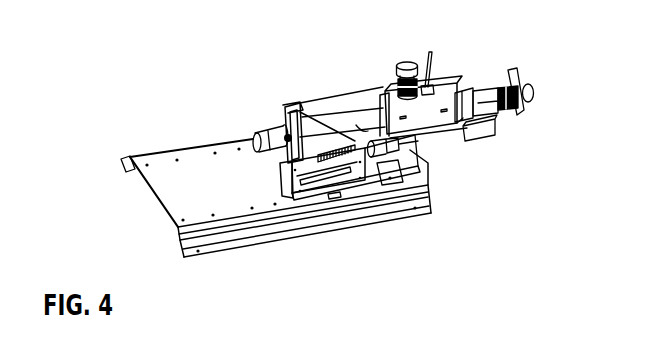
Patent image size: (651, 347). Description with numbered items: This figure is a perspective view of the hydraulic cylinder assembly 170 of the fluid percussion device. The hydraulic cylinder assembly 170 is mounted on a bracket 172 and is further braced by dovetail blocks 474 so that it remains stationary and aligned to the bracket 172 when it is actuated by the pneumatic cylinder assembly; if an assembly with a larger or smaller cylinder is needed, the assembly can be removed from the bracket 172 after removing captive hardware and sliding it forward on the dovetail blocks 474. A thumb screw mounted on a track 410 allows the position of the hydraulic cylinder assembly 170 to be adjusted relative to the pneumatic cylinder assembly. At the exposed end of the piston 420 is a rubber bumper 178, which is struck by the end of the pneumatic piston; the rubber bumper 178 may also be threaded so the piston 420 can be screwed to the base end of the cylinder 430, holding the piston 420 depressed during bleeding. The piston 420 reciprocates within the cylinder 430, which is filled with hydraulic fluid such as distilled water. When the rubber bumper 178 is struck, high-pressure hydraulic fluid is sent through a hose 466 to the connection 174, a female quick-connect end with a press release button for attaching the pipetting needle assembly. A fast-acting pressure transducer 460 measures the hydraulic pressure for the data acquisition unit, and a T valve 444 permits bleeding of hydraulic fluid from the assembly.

The bracket 172 is at (237, 248).
The hydraulic cylinder assembly 170 is at (351, 95).
The T valve 444 is at (399, 63).
The fast-acting pressure transducer 460 is at (434, 89).
The connection 174 is at (532, 105).
The hose 466 is at (480, 103).
The cylinder 430 is at (410, 143).
The piston 420 is at (283, 122).
The rubber bumper 178 is at (263, 136).
The track 410 is at (302, 192).
The dovetail blocks 474 is at (333, 197).